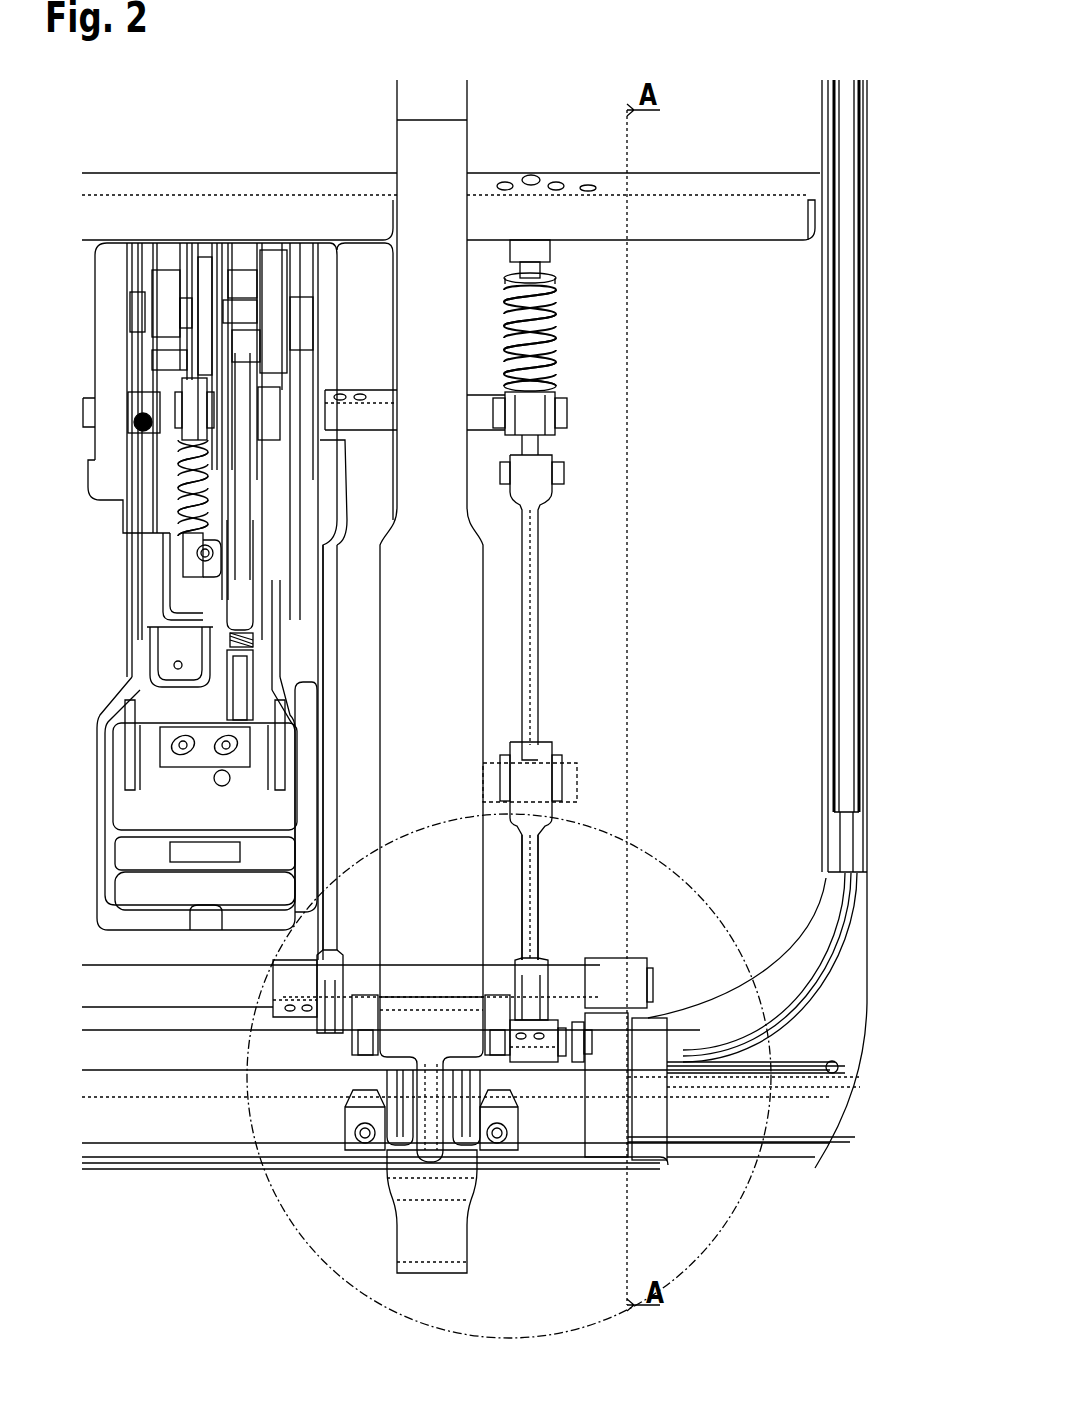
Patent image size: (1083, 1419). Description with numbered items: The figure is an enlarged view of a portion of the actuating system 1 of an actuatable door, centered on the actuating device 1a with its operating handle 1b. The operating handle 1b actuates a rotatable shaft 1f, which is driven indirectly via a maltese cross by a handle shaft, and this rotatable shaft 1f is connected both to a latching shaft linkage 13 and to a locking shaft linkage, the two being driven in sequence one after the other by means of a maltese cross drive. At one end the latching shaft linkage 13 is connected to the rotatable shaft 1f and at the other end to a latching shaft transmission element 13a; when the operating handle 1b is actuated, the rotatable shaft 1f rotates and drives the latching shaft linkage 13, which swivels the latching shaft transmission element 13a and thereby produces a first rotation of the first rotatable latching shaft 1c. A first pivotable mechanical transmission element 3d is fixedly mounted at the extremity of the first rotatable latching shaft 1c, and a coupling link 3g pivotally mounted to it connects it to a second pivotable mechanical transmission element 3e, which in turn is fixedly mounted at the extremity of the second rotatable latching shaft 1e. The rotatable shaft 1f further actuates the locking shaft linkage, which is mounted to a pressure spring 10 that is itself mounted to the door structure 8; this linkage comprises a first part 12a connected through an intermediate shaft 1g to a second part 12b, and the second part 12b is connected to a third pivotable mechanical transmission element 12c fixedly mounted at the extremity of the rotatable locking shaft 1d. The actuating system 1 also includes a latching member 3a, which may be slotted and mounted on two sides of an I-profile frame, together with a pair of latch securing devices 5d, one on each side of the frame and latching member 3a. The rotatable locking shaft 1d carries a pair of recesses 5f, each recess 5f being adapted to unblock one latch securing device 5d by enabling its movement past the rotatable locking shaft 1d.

The actuating system 1 is at (865, 48).
The actuating device 1a is at (72, 212).
The operating handle 1b is at (130, 918).
The first rotatable latching shaft 1c is at (125, 987).
The rotatable locking shaft 1d is at (135, 1048).
The second rotatable latching shaft 1e is at (130, 1120).
The rotatable shaft 1f is at (487, 417).
The intermediate shaft 1g is at (562, 790).
The latching member 3a is at (432, 1230).
The first pivotable mechanical transmission element 3d is at (628, 985).
The second pivotable mechanical transmission element 3e is at (607, 1130).
The coupling link 3g is at (605, 1068).
The latch securing device 5d is at (493, 1020).
The recess 5f is at (372, 1038).
The door structure 8 is at (770, 220).
The pressure spring 10 is at (557, 333).
The first part 12a is at (528, 567).
The second part 12b is at (530, 858).
The third pivotable mechanical transmission element 12c is at (525, 1052).
The latching shaft linkage 13 is at (335, 605).
The latching shaft transmission element 13a is at (307, 980).